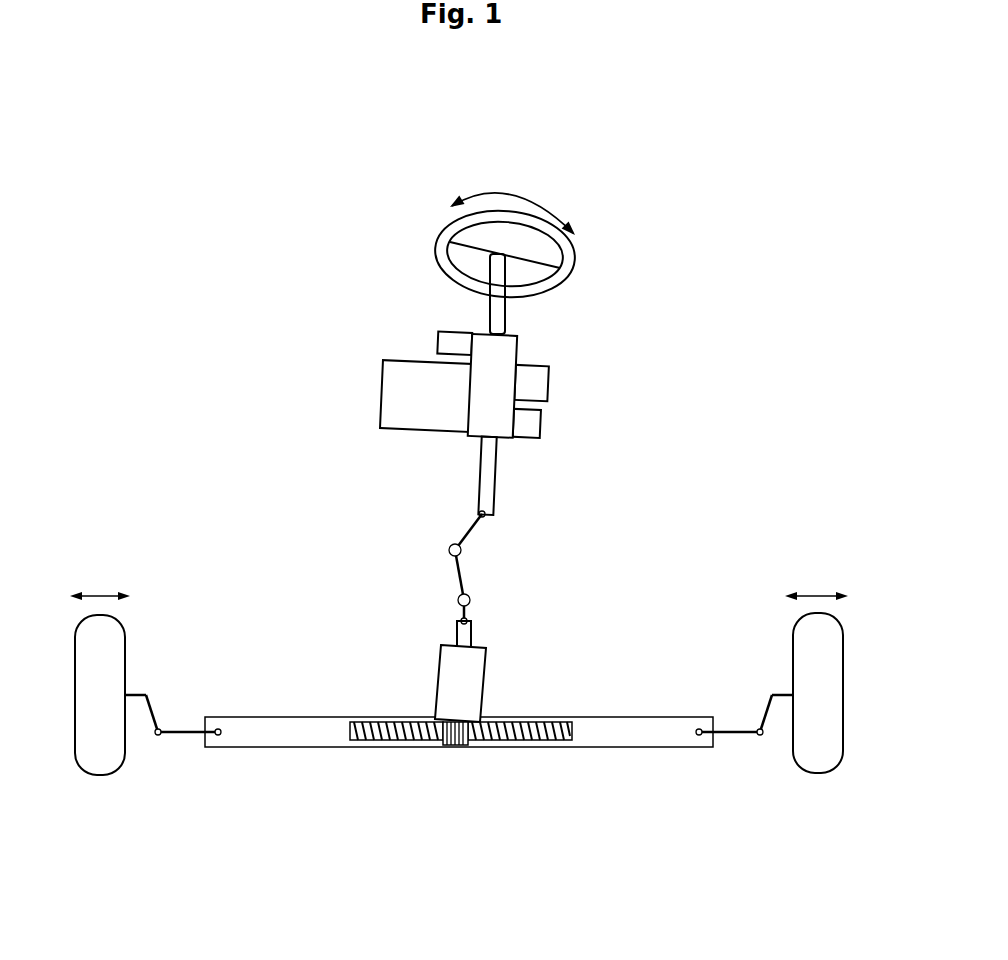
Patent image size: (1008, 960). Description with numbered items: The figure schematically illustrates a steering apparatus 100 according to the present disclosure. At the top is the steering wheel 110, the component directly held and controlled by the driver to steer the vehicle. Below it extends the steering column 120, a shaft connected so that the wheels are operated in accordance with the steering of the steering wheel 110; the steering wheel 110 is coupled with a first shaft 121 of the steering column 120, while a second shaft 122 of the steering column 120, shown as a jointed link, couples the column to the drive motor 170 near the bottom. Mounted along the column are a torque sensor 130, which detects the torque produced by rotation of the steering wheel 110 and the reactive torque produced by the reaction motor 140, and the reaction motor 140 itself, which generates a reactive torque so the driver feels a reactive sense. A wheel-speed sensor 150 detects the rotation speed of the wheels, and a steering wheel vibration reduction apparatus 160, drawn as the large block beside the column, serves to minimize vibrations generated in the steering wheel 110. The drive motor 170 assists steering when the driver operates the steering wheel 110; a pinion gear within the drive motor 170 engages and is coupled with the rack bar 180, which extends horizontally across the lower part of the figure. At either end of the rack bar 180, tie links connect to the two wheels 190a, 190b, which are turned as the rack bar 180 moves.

The steering apparatus 100 is at (252, 154).
The steering wheel 110 is at (574, 266).
The steering column 120 is at (517, 346).
The first shaft 121 is at (492, 474).
The second shaft 122 is at (470, 535).
The torque sensor 130 is at (550, 384).
The reaction motor 140 is at (543, 424).
The wheel-speed sensor 150 is at (437, 341).
The steering wheel vibration reduction apparatus 160 is at (383, 395).
The drive motor 170 is at (455, 748).
The rack bar 180 is at (512, 742).
The wheel 190a is at (815, 765).
The wheel 190b is at (100, 770).